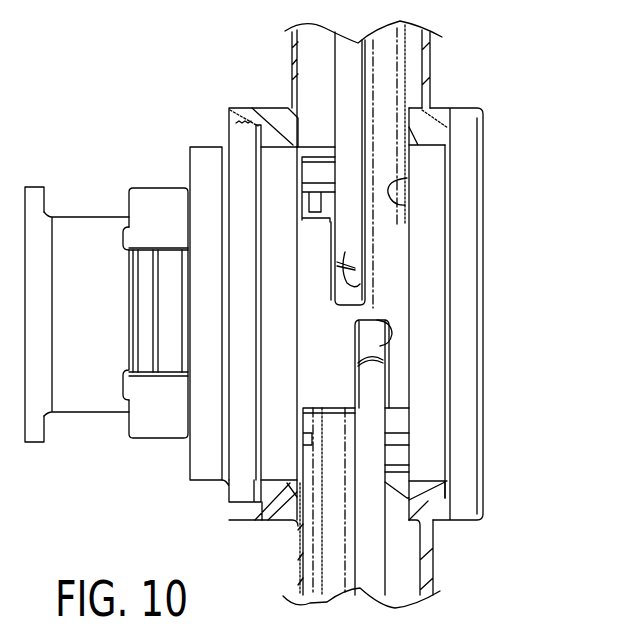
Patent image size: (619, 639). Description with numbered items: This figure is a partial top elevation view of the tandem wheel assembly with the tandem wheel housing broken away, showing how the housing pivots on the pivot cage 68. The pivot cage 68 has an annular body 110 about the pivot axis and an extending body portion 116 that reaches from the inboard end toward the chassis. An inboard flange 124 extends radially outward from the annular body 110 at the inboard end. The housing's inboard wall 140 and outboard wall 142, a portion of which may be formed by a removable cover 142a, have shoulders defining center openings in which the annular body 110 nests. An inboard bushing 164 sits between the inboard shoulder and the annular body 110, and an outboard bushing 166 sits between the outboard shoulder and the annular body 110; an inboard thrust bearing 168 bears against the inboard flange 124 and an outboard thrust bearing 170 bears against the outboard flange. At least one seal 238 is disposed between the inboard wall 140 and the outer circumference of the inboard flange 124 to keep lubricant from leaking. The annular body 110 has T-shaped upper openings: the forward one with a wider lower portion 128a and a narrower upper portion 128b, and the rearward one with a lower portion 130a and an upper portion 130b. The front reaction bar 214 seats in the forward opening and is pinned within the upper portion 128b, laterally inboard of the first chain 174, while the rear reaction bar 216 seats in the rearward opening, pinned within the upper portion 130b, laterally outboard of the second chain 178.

The pivot cage 68 is at (71, 207).
The extending body portion 116 is at (88, 395).
The inboard bushing 164 is at (277, 173).
The inboard thrust bearing 168 is at (257, 184).
The rear reaction bar 216 is at (333, 88).
The second chain 178 is at (386, 73).
The outboard bushing 166 is at (428, 157).
The cover 142a is at (479, 137).
The outboard thrust bearing 170 is at (450, 167).
The lower portion of rearward upper opening 130a is at (400, 205).
The upper portion of rearward upper opening 130b is at (357, 256).
The annular body 110 is at (400, 278).
The upper portion of forward upper opening 128b is at (373, 324).
The inboard flange 124 is at (238, 487).
The seal 238 is at (246, 508).
The inboard wall 140 is at (297, 563).
The first chain 174 is at (333, 581).
The lower portion of forward upper opening 128a is at (358, 504).
The front reaction bar 214 is at (373, 566).
The outboard wall 142 is at (432, 580).